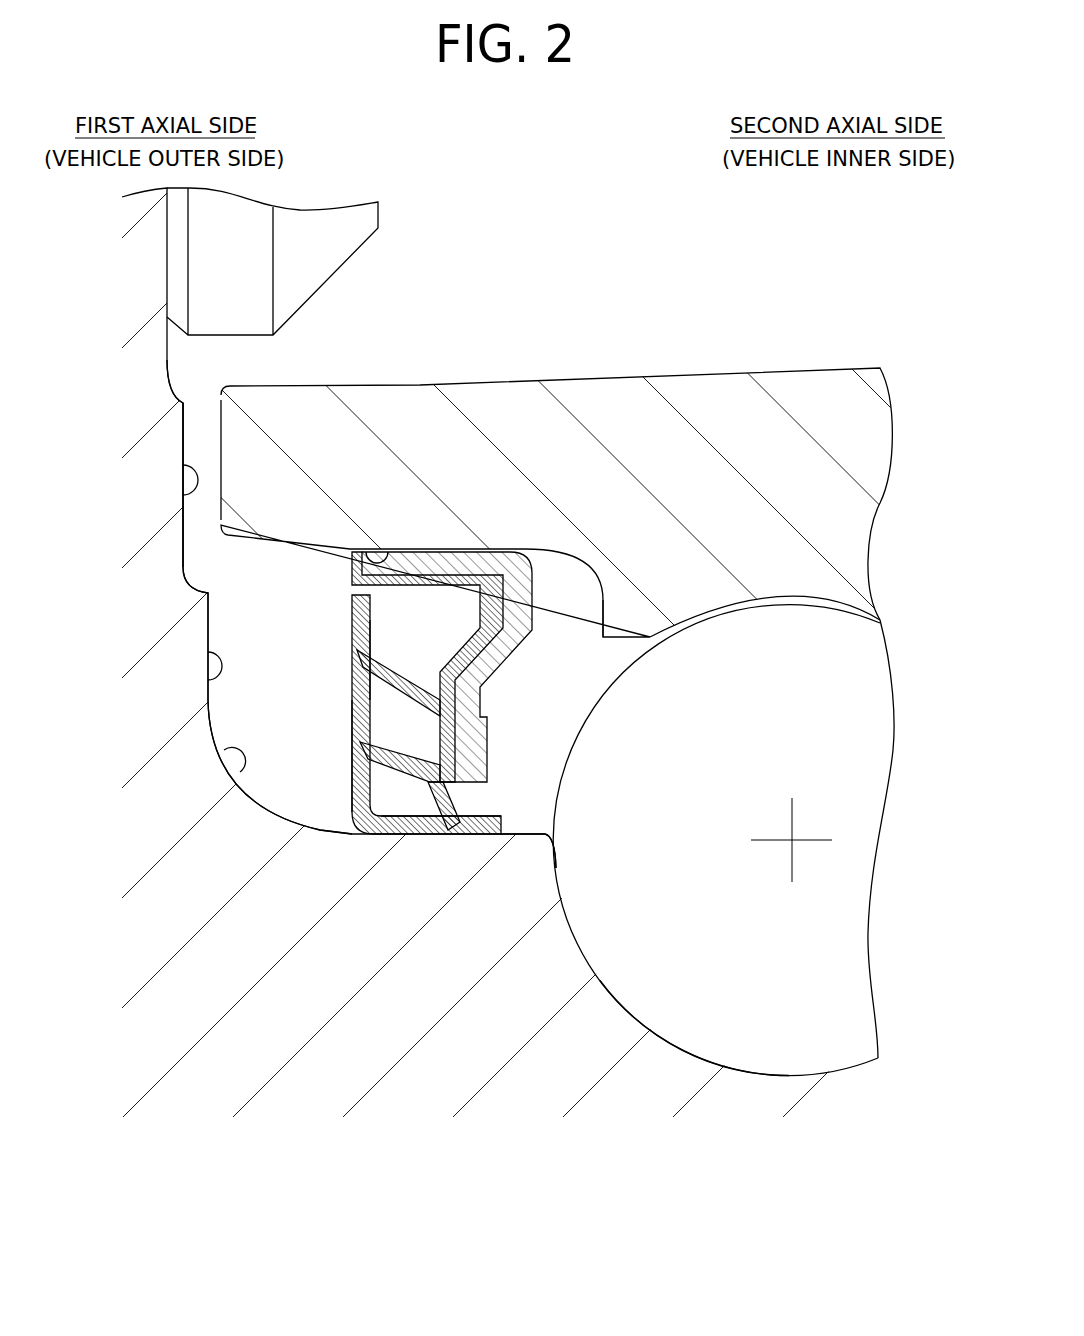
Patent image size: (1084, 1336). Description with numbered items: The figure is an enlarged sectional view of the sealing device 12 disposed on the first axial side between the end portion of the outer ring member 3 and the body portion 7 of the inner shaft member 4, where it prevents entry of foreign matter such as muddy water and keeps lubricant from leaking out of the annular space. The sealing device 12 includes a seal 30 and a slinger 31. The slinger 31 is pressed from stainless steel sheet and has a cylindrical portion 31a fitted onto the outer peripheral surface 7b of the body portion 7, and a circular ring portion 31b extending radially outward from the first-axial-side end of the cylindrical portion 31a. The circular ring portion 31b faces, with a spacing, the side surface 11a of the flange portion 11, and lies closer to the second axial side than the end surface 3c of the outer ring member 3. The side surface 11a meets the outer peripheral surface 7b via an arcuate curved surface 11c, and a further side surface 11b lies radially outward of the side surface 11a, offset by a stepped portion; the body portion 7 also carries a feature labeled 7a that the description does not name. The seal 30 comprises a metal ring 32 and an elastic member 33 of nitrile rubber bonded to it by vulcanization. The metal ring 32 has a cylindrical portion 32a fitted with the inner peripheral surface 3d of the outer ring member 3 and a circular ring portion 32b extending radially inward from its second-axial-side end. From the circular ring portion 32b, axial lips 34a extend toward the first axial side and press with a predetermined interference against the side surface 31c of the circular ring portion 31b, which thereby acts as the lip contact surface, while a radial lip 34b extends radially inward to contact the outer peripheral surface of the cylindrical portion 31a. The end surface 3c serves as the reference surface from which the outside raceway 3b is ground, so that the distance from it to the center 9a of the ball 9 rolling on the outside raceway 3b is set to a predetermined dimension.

The outer ring member 3 is at (675, 375).
The outside raceway 3b is at (738, 603).
The end surface 3c is at (220, 448).
The inner peripheral surface 3d is at (367, 552).
The body portion 7 is at (317, 1078).
The inner shaft member 4 is at (267, 618).
The inner raceway surface 7a is at (682, 1050).
The outer peripheral surface 7b is at (518, 835).
The ball 9 is at (793, 1038).
The center of the ball 9a is at (793, 842).
The flange portion 11 is at (140, 422).
The side surface 11a is at (207, 668).
The side surface 11b is at (183, 494).
The curved surface 11c is at (233, 765).
The sealing device 12 is at (540, 598).
The seal 30 is at (461, 550).
The slinger 31 is at (347, 644).
The cylindrical portion 31a is at (428, 834).
The circular ring portion 31b is at (350, 775).
The side surface 31c is at (375, 650).
The metal ring 32 is at (488, 564).
The cylindrical portion 32a is at (422, 565).
The circular ring portion 32b is at (497, 657).
The elastic member 33 is at (430, 657).
The axial lips 34a is at (395, 690).
The radial lip 34b is at (455, 800).